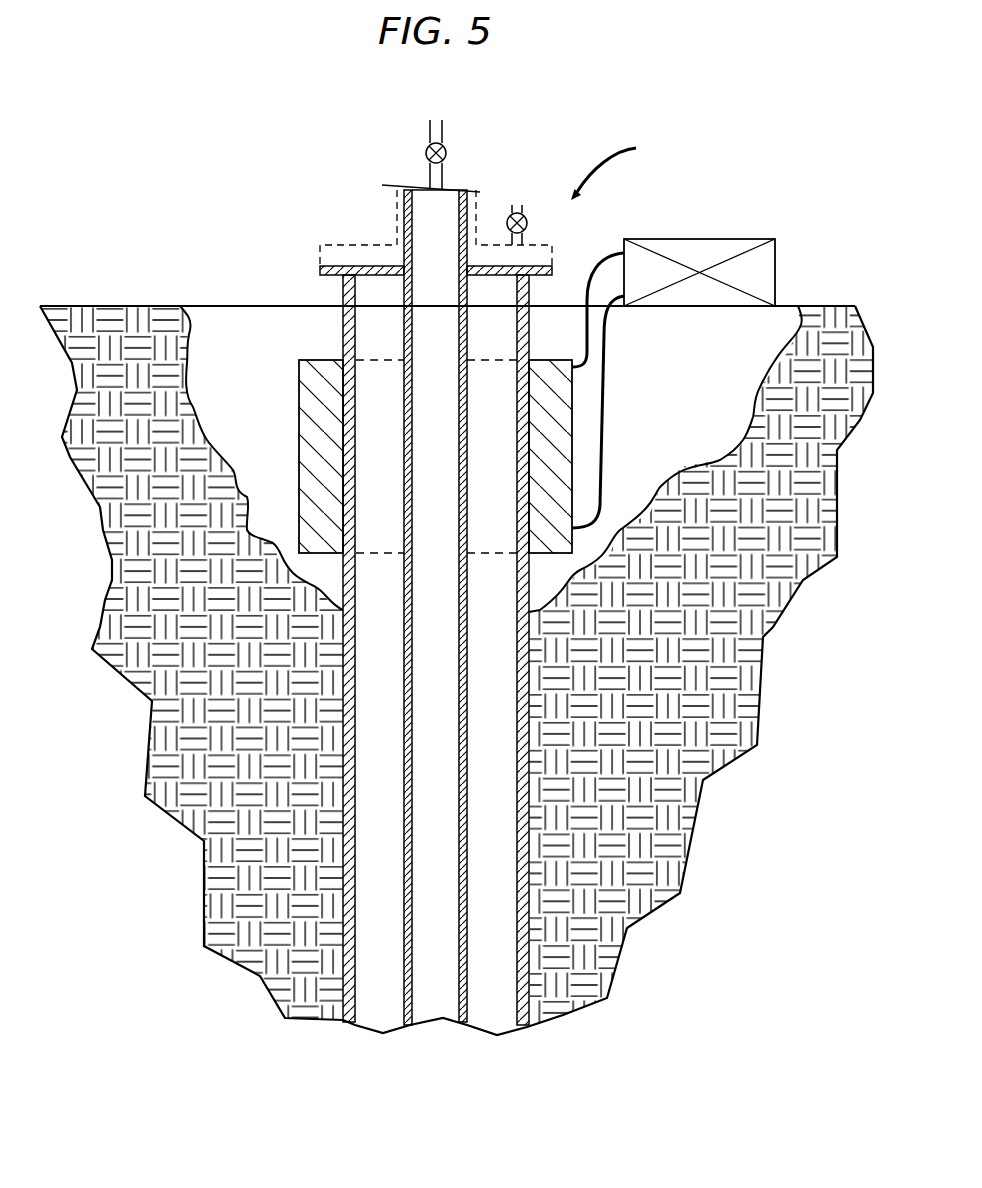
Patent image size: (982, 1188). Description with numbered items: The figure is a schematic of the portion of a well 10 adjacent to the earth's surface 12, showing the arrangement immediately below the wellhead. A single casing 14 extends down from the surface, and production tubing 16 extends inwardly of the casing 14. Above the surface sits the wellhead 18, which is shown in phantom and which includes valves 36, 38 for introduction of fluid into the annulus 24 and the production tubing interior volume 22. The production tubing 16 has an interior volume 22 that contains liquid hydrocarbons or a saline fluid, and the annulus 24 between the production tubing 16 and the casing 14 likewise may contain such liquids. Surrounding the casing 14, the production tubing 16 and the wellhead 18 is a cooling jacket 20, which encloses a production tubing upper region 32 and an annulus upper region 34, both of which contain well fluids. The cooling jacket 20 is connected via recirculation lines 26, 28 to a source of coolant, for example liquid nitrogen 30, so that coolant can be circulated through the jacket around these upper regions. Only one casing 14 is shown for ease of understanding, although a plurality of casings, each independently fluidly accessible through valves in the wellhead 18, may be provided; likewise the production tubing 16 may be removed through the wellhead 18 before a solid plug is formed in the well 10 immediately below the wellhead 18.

The well 10 is at (618, 165).
The earth's surface 12 is at (137, 303).
The casing 14 is at (344, 731).
The production tubing 16 is at (466, 747).
The wellhead 18 is at (478, 206).
The cooling jacket 20 is at (557, 481).
The interior volume 22 is at (425, 776).
The annulus 24 is at (480, 791).
The recirculation line 26 is at (601, 401).
The recirculation line 28 is at (619, 254).
The liquid nitrogen 30 is at (764, 263).
The production tubing upper region 32 is at (425, 467).
The annulus upper region 34 is at (480, 467).
The valve 36 is at (527, 217).
The valve 38 is at (427, 150).